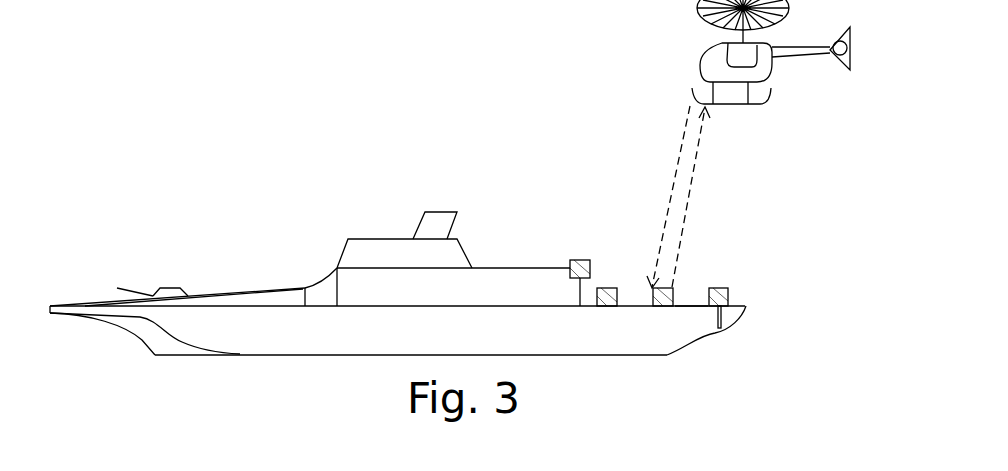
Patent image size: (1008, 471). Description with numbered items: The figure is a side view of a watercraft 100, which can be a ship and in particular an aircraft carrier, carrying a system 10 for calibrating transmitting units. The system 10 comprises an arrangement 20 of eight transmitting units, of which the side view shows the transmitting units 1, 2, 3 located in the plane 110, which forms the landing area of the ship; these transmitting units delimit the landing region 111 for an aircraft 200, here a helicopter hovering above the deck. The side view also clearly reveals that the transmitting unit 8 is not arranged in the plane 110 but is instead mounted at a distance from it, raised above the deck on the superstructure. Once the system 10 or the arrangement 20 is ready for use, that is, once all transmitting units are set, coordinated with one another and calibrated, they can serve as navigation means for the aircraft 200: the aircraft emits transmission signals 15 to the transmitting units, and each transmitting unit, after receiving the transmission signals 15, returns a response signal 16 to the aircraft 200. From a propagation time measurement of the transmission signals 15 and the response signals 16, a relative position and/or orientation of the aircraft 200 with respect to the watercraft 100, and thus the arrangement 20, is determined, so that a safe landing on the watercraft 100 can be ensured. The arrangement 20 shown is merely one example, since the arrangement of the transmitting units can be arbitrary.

The watercraft 100 is at (148, 191).
The aircraft 200 is at (717, 77).
The system 10 is at (465, 283).
The arrangement 20 is at (748, 303).
The plane 110 is at (731, 265).
The landing region 111 is at (693, 304).
The transmission signals 15 is at (677, 157).
The response signal 16 is at (703, 133).
The transmitting unit 8 is at (580, 260).
The transmitting unit 1 is at (605, 299).
The transmitting unit 2 is at (660, 300).
The transmitting unit 3 is at (725, 300).